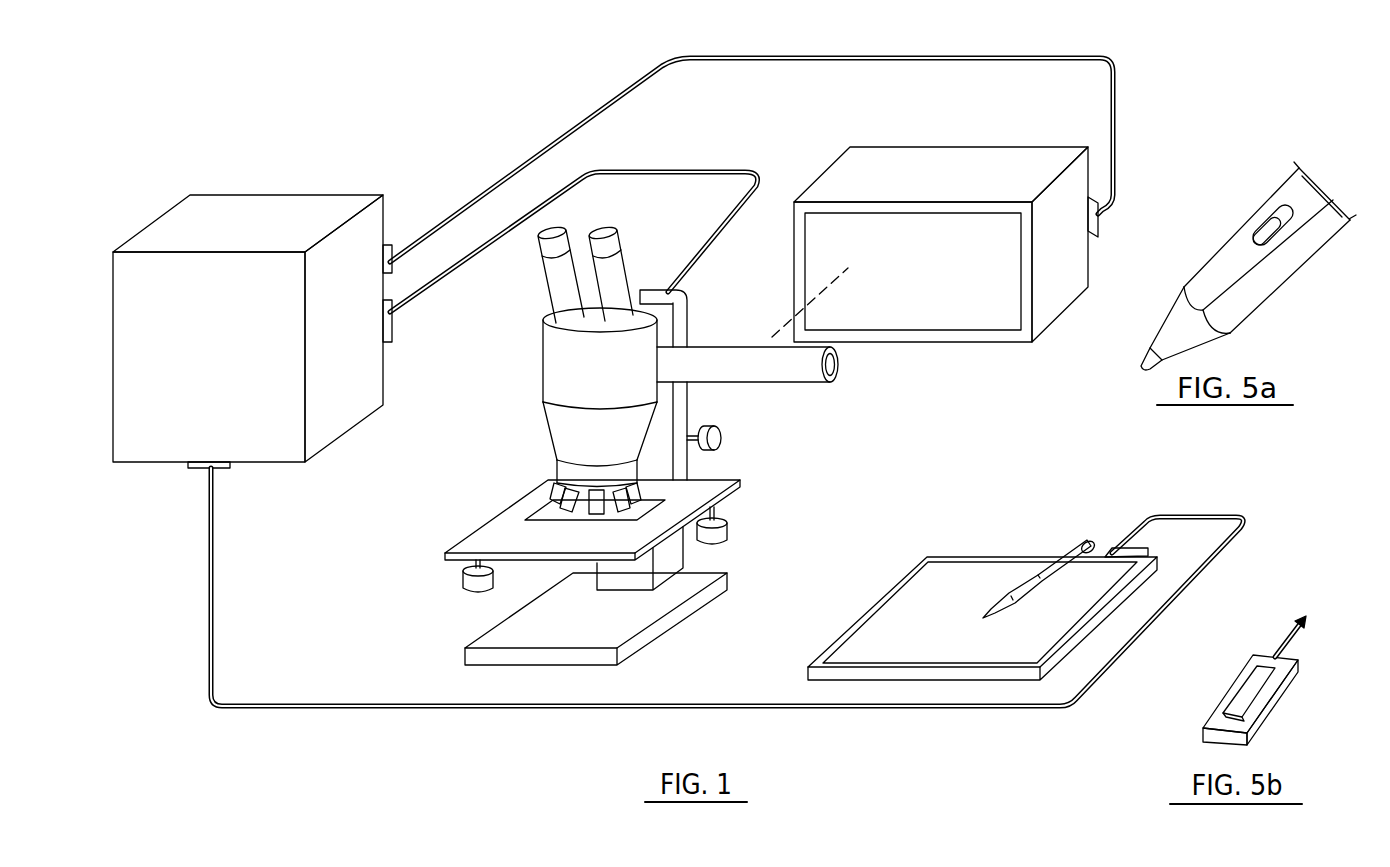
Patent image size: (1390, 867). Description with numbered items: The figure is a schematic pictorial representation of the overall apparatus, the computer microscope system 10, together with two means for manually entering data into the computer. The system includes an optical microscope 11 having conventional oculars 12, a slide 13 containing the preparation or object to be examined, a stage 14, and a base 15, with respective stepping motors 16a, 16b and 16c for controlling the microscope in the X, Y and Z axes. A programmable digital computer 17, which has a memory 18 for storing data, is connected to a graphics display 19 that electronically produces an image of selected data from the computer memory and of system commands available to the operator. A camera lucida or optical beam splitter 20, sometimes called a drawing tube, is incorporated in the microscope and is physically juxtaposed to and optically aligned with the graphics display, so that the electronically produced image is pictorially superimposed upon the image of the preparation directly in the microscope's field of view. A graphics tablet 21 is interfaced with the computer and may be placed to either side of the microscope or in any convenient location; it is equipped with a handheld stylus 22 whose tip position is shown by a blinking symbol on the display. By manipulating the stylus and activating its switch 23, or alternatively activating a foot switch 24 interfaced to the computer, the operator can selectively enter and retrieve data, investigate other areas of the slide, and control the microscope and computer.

In FIG. 1, the computer microscope system 10 is at (345, 112).
In FIG. 1, the optical microscope 11 is at (566, 368).
In FIG. 1, the oculars 12 is at (591, 231).
In FIG. 1, the slide 13 is at (552, 512).
In FIG. 1, the stage 14 is at (502, 540).
In FIG. 1, the base 15 is at (540, 620).
In FIG. 1, the stepping motor 16a is at (463, 585).
In FIG. 1, the stepping motor 16b is at (722, 537).
In FIG. 1, the stepping motor 16c is at (725, 441).
In FIG. 1, the programmable digital computer 17 is at (264, 228).
In FIG. 1, the memory 18 is at (244, 433).
In FIG. 1, the graphics display 19 is at (920, 177).
In FIG. 1, the optical beam splitter 20 is at (780, 372).
In FIG. 1, the graphics tablet 21 is at (928, 602).
In FIG. 1, the handheld stylus 22 is at (1020, 592).
In FIG. 5A, the handheld stylus 22 is at (1242, 287).
In FIG. 5A, the switch 23 is at (1272, 218).
In FIG. 5B, the foot switch 24 is at (1250, 688).